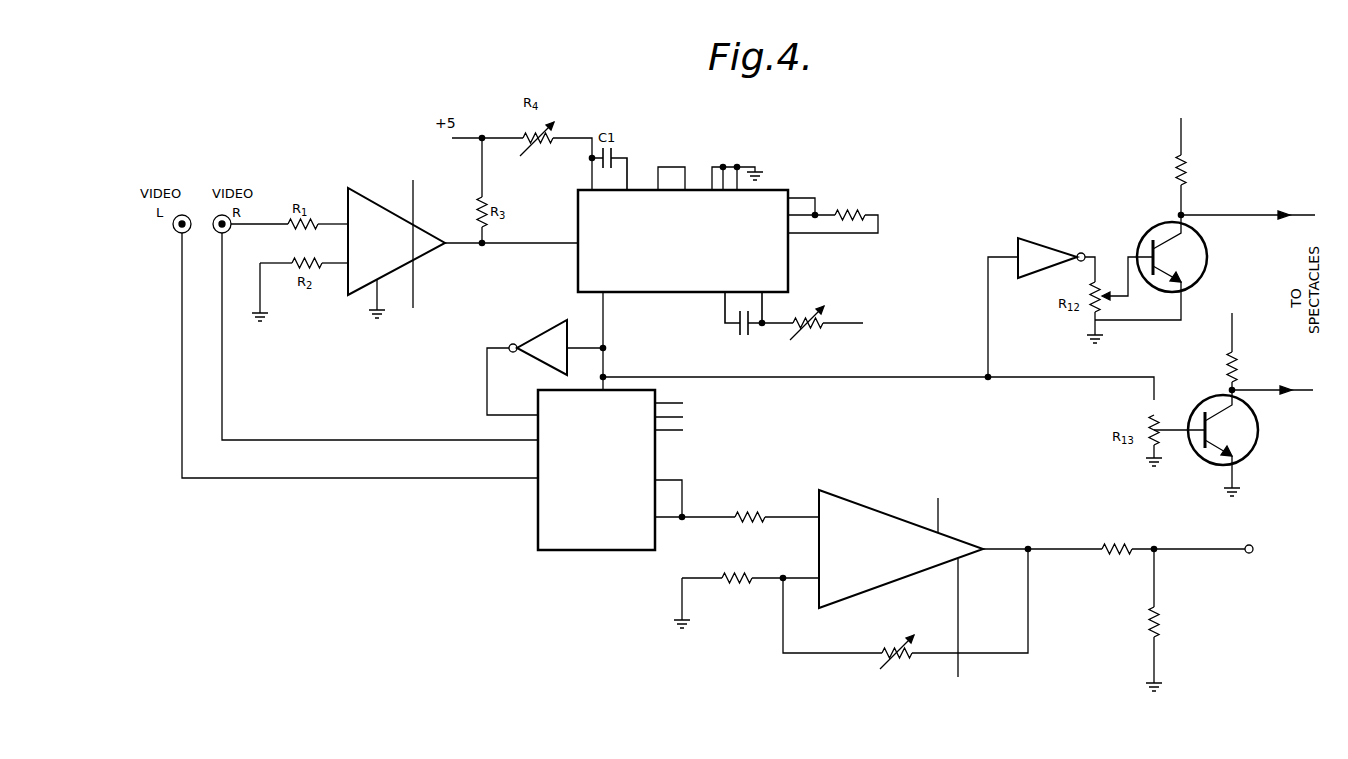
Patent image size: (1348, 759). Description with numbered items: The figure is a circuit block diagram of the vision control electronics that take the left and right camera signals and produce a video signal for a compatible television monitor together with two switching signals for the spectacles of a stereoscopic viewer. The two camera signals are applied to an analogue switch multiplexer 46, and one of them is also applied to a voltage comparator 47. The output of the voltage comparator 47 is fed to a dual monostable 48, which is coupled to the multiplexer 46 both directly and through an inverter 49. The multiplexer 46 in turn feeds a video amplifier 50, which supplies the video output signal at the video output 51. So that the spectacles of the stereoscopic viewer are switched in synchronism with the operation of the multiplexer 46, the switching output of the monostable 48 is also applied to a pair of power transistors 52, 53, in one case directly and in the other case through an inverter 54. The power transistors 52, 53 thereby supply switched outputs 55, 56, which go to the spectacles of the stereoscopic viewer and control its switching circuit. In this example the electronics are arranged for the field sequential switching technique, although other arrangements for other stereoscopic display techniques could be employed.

The analogue switch multiplexer 46 is at (570, 533).
The voltage comparator 47 is at (368, 207).
The dual monostable 48 is at (663, 283).
The inverter 49 is at (540, 335).
The video amplifier 50 is at (858, 522).
The video output 51 is at (1203, 551).
The power transistor 52 is at (1200, 458).
The power transistor 53 is at (1141, 233).
The inverter 54 is at (1034, 273).
The switched output 55 is at (1289, 394).
The switched output 56 is at (1248, 215).